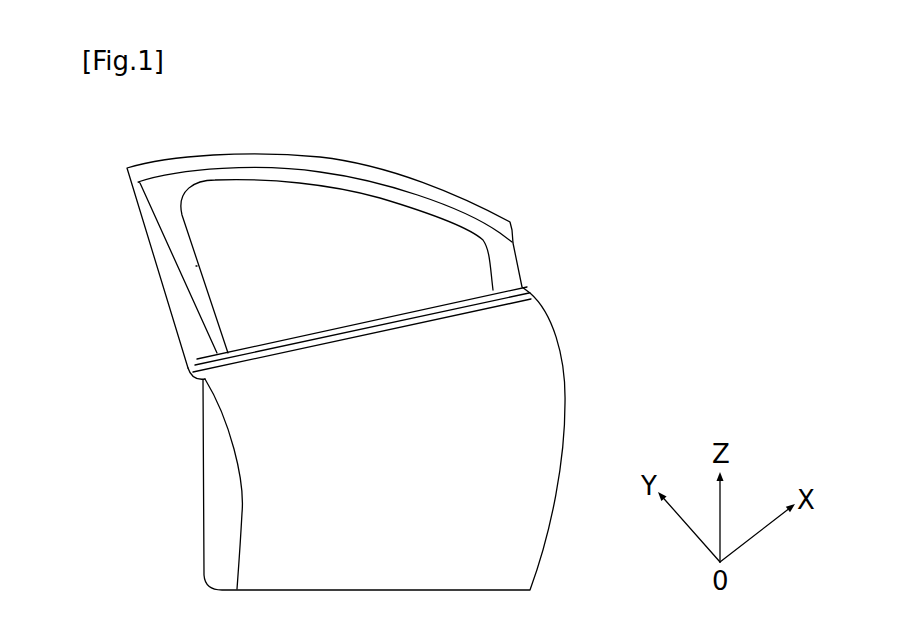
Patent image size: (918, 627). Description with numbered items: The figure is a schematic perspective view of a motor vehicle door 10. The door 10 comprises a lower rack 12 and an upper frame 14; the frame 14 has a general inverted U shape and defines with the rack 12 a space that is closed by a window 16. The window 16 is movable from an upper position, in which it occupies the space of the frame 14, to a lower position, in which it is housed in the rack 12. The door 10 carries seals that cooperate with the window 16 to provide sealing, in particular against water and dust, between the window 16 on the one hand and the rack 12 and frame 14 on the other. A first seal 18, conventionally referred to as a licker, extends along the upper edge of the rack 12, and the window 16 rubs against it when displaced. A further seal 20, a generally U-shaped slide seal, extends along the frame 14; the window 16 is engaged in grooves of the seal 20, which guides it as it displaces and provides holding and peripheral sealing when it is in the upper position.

The door 10 is at (608, 285).
The rack 12 is at (522, 421).
The frame 14 is at (142, 208).
The window 16 is at (338, 215).
The first seal 18 is at (343, 342).
The further seal 20 is at (197, 266).